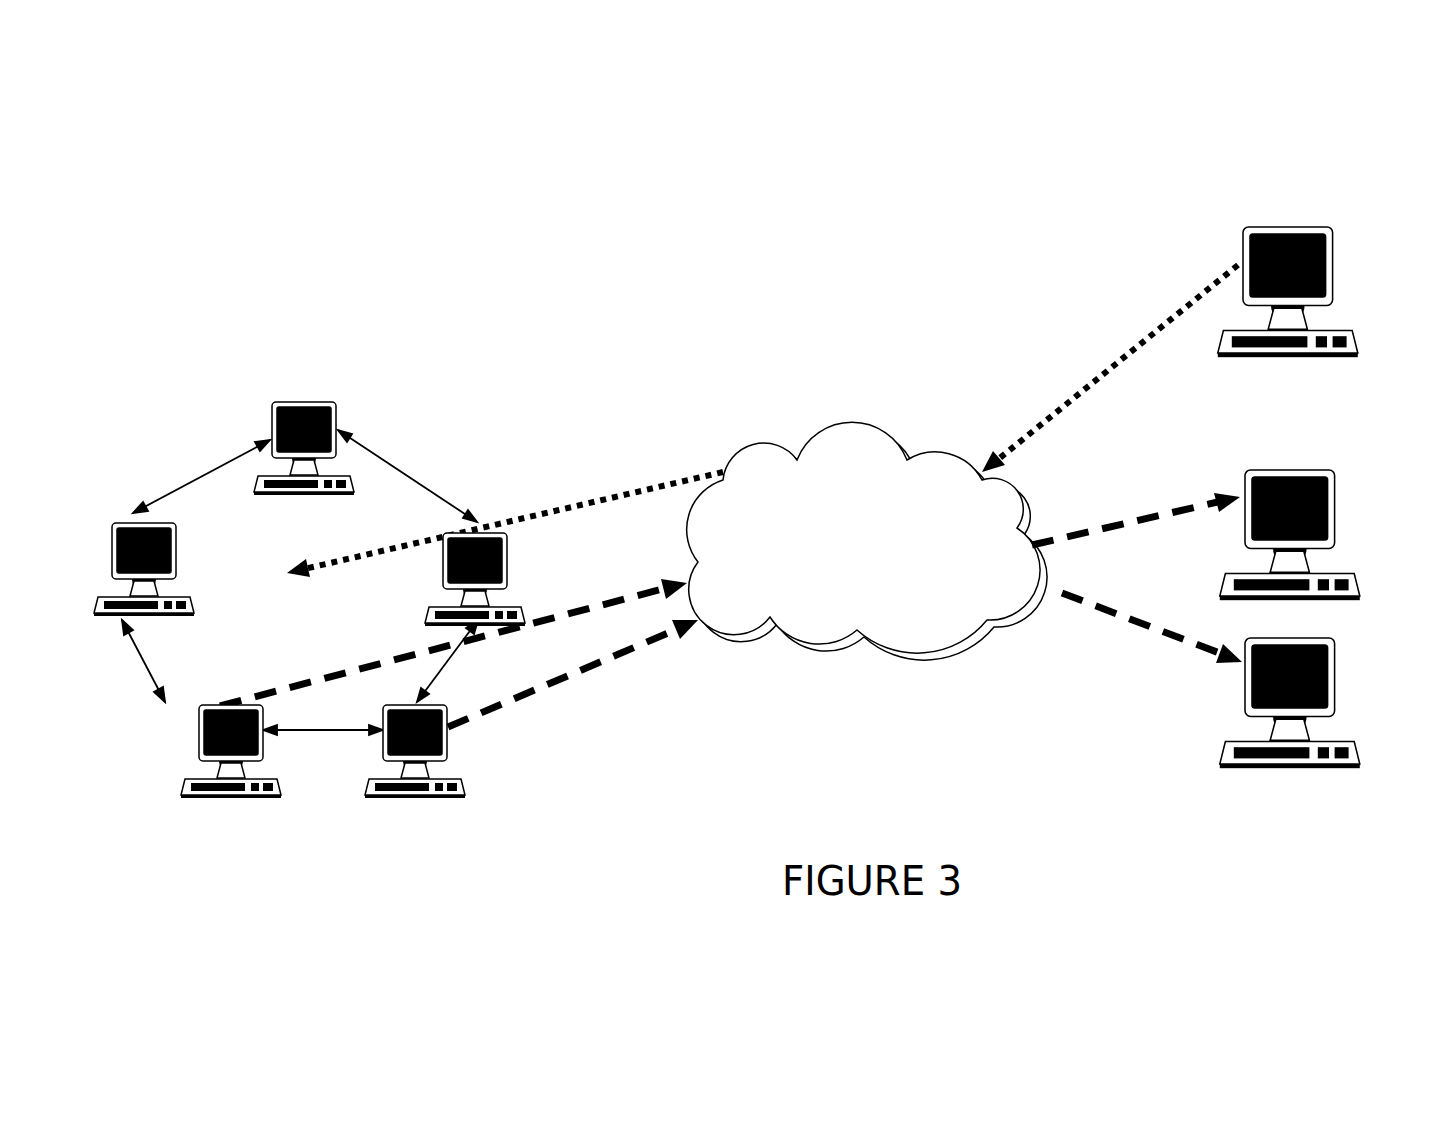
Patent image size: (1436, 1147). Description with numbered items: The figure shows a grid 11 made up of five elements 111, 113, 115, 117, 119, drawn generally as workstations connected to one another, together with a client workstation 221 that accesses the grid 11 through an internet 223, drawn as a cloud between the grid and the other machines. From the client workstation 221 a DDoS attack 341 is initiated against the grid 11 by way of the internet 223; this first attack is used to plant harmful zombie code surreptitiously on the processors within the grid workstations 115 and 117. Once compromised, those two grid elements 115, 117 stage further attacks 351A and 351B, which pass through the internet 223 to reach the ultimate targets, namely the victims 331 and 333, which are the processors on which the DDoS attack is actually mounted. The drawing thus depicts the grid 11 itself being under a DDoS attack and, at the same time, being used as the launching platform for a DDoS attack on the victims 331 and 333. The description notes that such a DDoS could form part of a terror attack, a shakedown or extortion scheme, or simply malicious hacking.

The grid 11 is at (270, 330).
The grid element 111 is at (337, 413).
The grid element 113 is at (518, 570).
The grid element 115 is at (453, 740).
The grid element 117 is at (197, 755).
The grid element 119 is at (172, 560).
The client workstation 221 is at (1238, 250).
The internet 223 is at (880, 435).
The victim 331 is at (1345, 517).
The victim 333 is at (1332, 700).
The DDoS attack 341 is at (1107, 370).
The attack 351A is at (645, 647).
The attack 351B is at (1077, 588).